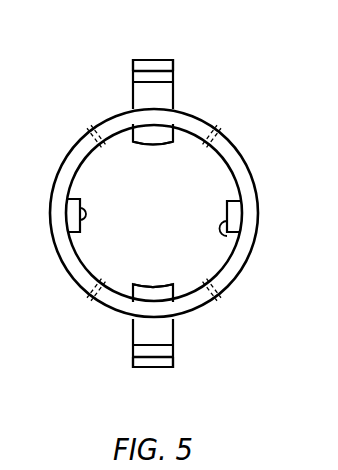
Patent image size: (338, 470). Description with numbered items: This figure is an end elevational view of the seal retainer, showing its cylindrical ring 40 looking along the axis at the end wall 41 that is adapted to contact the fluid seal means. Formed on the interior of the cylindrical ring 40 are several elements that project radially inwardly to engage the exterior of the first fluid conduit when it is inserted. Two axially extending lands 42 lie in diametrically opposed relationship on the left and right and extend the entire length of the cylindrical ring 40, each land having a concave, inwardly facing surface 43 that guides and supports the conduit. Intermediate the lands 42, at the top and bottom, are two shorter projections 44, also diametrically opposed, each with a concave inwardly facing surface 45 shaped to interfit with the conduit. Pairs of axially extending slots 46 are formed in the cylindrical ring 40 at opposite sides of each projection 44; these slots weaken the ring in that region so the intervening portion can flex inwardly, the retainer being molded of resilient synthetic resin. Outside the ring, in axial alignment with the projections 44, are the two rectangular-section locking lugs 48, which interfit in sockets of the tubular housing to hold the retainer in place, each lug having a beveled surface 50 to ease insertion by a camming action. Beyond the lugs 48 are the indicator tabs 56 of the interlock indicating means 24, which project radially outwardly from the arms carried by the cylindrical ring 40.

The interlock indicating means 24 is at (175, 63).
The cylindrical ring 40 is at (245, 163).
The end wall 41 is at (232, 273).
The axially extending lands 42 is at (68, 197).
The concave inwardly facing surface 43 is at (82, 210).
The projections 44 is at (176, 133).
The inwardly facing surface 45 is at (147, 142).
The axially extending slots 46 is at (87, 127).
The locking lugs 48 is at (145, 94).
The beveled surface 50 is at (168, 78).
The indicator tabs 56 is at (150, 60).